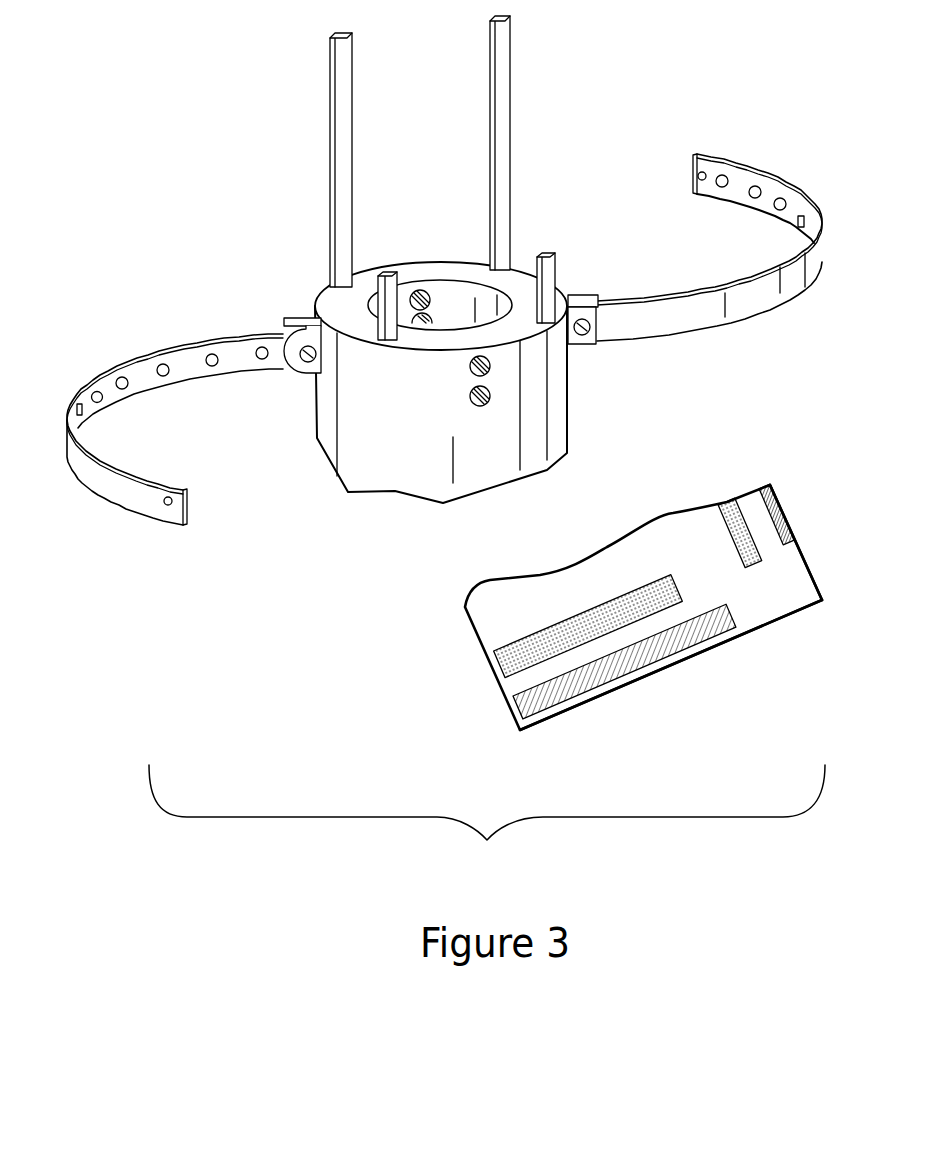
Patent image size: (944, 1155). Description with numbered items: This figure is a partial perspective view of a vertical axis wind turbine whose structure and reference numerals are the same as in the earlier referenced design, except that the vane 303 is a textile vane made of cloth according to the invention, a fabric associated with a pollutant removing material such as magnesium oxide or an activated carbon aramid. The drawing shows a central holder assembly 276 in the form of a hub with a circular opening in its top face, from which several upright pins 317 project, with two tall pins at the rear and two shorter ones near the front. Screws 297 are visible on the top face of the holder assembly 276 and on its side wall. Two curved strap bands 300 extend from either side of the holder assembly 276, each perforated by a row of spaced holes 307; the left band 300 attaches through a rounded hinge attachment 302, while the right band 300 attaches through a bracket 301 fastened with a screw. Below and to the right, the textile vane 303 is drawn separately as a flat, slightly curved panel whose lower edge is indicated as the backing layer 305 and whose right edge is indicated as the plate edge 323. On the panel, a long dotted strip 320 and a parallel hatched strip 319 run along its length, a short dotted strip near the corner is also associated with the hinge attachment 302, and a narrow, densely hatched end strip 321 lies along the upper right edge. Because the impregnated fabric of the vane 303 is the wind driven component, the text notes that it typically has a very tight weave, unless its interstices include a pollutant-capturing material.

The holder assembly 276 is at (435, 518).
The screws 297 is at (445, 305).
The strap band 300 is at (143, 383).
The bracket 301 is at (308, 362).
The hinge attachment 302 is at (298, 320).
The vane 303 is at (707, 533).
The plate backing layer 305 is at (665, 670).
The holes 307 is at (260, 353).
The pins 317 is at (342, 93).
The hatched strip 319 is at (547, 700).
The dotted strip 320 is at (493, 666).
The end strip 321 is at (785, 512).
The plate edge 323 is at (813, 577).